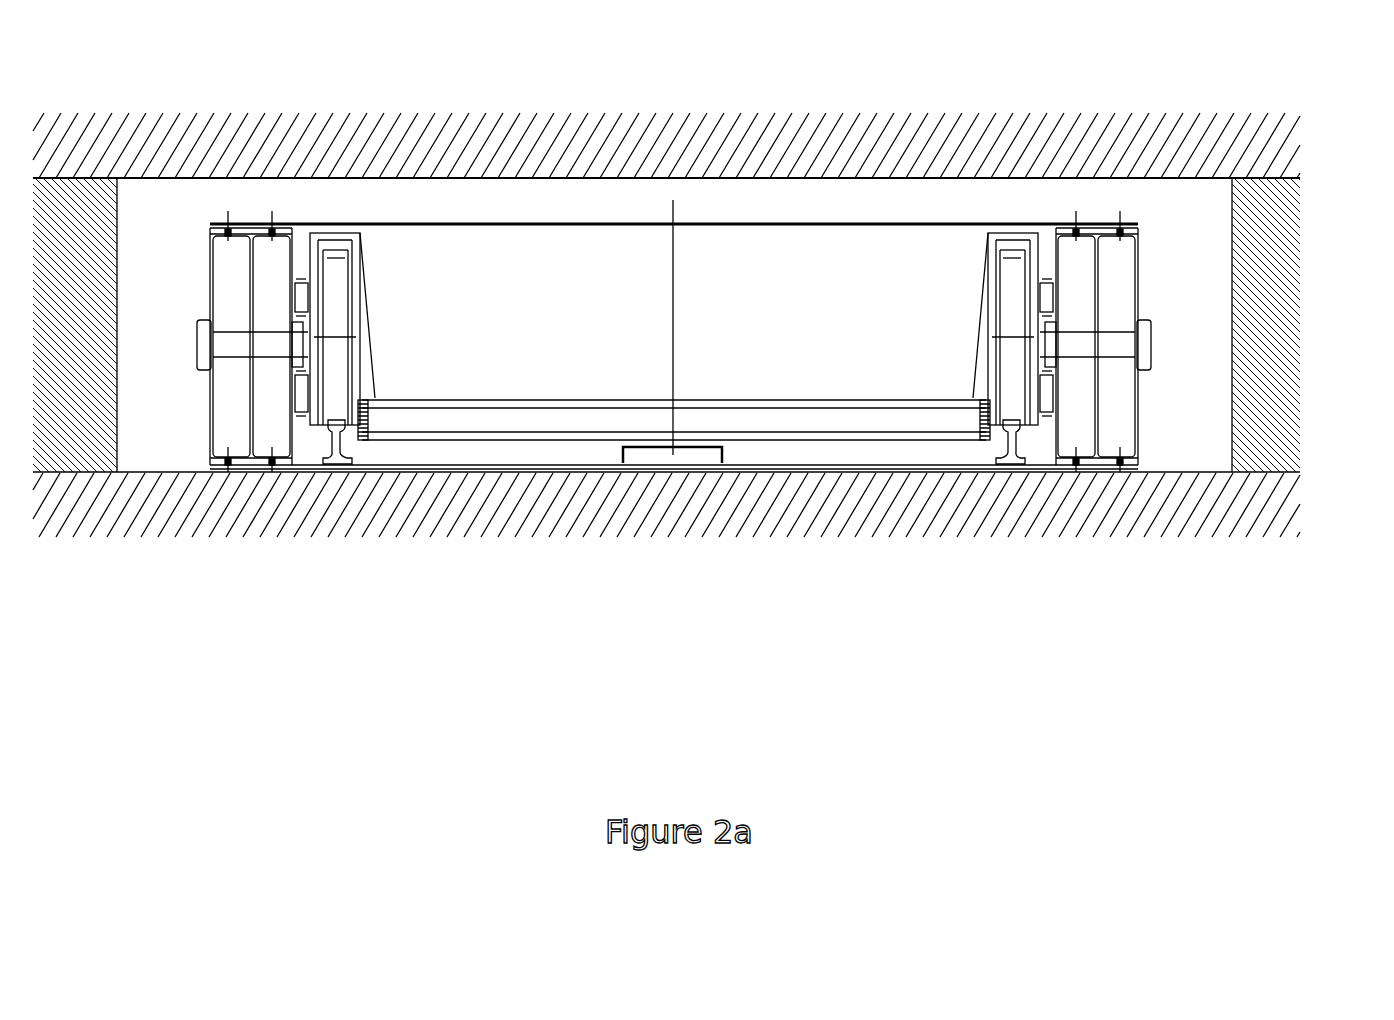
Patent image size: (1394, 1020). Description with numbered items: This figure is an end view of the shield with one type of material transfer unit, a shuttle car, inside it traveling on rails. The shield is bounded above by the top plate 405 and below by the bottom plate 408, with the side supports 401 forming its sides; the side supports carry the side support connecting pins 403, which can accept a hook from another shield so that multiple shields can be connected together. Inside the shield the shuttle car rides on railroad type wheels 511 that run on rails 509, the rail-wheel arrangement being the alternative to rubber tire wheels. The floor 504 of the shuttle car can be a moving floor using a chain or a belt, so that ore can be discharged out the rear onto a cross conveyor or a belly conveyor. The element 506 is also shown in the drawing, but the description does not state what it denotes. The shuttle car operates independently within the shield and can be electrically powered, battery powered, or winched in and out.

The side supports 401 is at (1140, 269).
The side support connecting pins 403 is at (1112, 352).
The top plate 405 is at (747, 224).
The bottom plate 408 is at (572, 472).
The floor 504 is at (728, 422).
The panel 506 is at (858, 253).
The rails 509 is at (330, 438).
The railroad type wheels 511 is at (335, 377).